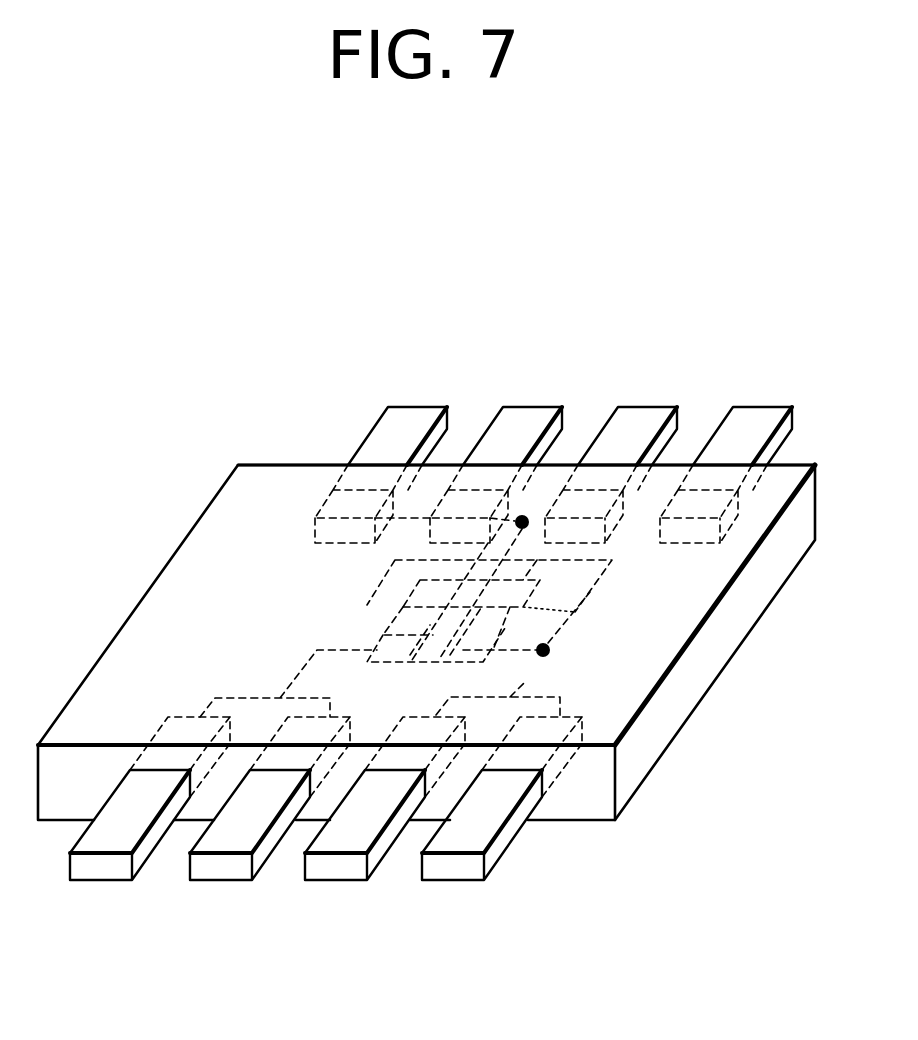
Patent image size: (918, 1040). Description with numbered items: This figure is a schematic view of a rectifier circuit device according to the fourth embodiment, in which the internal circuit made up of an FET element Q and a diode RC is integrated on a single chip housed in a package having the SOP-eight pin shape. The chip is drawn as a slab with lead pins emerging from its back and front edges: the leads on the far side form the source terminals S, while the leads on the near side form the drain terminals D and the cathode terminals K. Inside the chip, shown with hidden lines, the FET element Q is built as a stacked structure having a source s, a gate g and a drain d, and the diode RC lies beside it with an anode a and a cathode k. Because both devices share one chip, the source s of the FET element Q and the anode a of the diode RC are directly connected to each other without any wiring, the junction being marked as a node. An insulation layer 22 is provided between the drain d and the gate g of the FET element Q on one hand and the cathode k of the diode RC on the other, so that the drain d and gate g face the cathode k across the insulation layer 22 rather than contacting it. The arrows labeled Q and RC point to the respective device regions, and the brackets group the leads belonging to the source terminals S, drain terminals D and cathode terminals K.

The source terminals S is at (808, 395).
The drain terminals D is at (225, 905).
The cathode terminals K is at (455, 905).
The FET element Q is at (350, 668).
The diode RC is at (493, 661).
The insulation layer 22 is at (570, 620).
The source s is at (418, 588).
The gate g is at (390, 615).
The drain d is at (377, 650).
The cathode k is at (552, 647).
The anode a is at (589, 589).